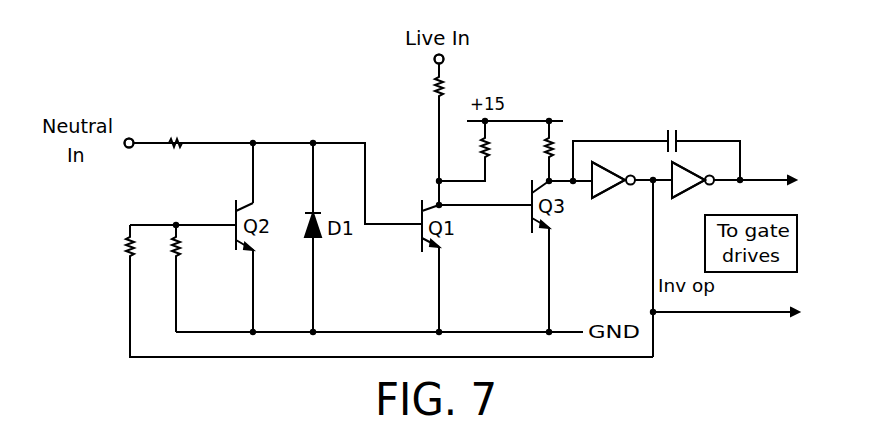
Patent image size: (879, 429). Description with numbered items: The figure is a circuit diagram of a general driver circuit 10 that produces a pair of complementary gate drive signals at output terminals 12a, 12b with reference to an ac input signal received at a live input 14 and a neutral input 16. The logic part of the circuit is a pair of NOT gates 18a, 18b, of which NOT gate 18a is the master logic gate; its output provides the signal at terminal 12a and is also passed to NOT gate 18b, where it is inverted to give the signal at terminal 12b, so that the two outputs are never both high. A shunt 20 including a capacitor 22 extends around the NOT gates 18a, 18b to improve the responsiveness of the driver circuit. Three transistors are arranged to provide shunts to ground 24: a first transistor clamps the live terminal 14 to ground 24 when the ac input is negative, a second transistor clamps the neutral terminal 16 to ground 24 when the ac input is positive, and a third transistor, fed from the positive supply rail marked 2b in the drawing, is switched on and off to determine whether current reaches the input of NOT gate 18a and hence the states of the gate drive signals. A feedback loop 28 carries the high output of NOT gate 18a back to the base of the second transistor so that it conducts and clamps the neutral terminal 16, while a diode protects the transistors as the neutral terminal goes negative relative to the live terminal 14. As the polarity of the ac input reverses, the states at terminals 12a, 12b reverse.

The driver circuit 10 is at (283, 108).
The live input 14 is at (418, 60).
The neutral input 16 is at (118, 157).
The +15 V power supply rail 2b is at (551, 110).
The shunt 20 is at (604, 141).
The capacitor 22 is at (686, 130).
The output terminal 12b is at (777, 170).
The NOT gate 18a is at (603, 198).
The NOT gate 18b is at (690, 196).
The ground 24 is at (475, 332).
The feedback loop 28 is at (195, 359).
The output terminal 12a is at (779, 322).